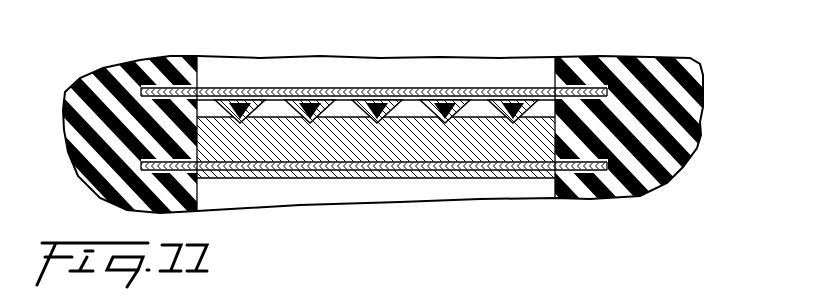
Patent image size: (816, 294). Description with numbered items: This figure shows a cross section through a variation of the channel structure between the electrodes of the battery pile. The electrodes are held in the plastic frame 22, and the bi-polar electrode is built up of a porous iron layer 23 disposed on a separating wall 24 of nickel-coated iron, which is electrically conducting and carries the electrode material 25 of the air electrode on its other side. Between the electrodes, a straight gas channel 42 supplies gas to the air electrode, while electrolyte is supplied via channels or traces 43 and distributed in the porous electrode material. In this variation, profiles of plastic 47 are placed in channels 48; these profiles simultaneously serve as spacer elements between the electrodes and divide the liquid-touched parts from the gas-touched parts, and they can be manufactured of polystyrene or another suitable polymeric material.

The plastic frame 22 is at (687, 158).
The porous iron layer 23 is at (413, 153).
The separating wall 24 is at (690, 90).
The electrode material of the air electrode 25 is at (514, 98).
The gas channel 42 is at (378, 106).
The electrolyte channels or traces 43 is at (413, 110).
The profiles of plastic 47 is at (300, 100).
The channels 48 is at (343, 110).